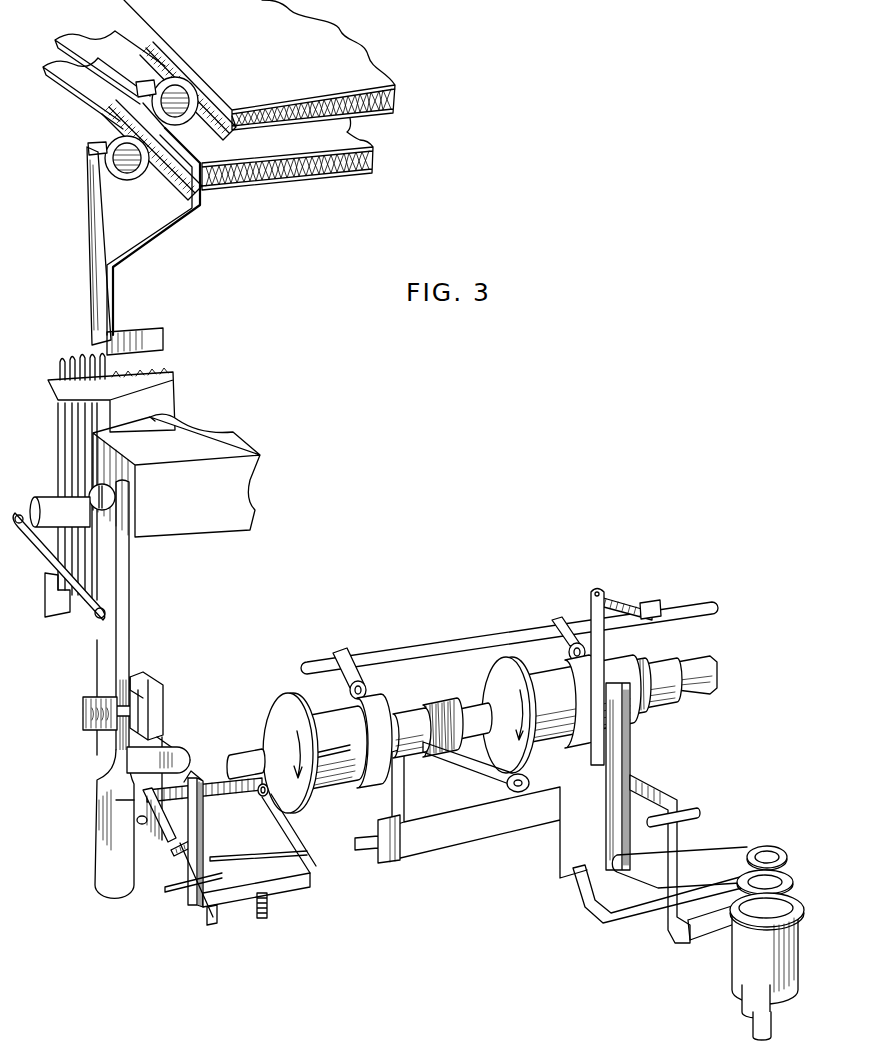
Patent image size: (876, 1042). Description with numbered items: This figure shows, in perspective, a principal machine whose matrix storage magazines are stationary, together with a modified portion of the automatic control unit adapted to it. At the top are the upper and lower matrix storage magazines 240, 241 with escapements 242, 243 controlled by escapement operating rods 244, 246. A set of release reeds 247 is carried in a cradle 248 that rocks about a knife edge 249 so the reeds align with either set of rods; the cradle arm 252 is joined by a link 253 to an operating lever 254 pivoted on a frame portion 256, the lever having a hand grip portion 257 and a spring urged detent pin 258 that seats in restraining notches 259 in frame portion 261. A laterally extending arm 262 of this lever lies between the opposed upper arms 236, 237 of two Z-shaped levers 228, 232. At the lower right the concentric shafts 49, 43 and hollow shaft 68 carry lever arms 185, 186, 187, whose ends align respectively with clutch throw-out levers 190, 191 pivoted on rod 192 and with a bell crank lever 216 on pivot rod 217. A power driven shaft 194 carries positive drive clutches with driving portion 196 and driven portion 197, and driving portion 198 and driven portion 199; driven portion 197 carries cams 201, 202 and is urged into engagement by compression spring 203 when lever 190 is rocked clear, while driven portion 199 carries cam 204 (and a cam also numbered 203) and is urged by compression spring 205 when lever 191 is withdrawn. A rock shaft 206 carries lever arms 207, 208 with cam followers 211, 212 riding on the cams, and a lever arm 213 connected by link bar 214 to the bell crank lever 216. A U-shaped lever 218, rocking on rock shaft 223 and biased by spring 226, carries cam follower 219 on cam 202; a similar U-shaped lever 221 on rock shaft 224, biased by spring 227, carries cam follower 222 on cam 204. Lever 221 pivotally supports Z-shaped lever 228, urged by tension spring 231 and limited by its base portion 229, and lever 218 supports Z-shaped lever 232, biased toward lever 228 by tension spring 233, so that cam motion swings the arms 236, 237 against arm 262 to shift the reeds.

The upper matrix storage magazine 240 is at (380, 76).
The lower matrix storage magazine 241 is at (357, 143).
The escapement 242 is at (186, 118).
The escapement 243 is at (133, 182).
The escapement operating rod 244 is at (151, 243).
The escapement operating rod 246 is at (88, 218).
The release reeds 247 is at (57, 435).
The cradle 248 is at (168, 388).
The knife edge 249 is at (56, 616).
The arm 252 is at (60, 495).
The link 253 is at (45, 556).
The operating lever 254 is at (130, 566).
The frame portion 256 is at (240, 486).
The hand grip portion 257 is at (110, 886).
The spring urged detent pin 258 is at (117, 692).
The restraining notches 259 is at (142, 686).
The frame portion 261 is at (152, 696).
The laterally extending arm 262 is at (176, 746).
The upper arm 237 is at (162, 730).
The upper arm 236 is at (191, 770).
The spring 226 is at (140, 789).
The Z-shaped lever 232 is at (136, 815).
The rock shaft 223 is at (138, 826).
The tension spring 233 is at (180, 853).
The tension spring 231 is at (182, 875).
The base portion 229 is at (211, 917).
The spring 227 is at (265, 920).
The U-shaped lever 221 is at (293, 889).
The cam follower 222 is at (262, 800).
The rock shaft 224 is at (253, 859).
The Z-shaped lever 228 is at (198, 822).
The U-shaped lever 218 is at (225, 782).
The cam follower 219 is at (508, 793).
The cam 204 is at (266, 719).
The compression spring 205 is at (334, 781).
The compression spring 203 is at (378, 697).
The driven portion 199 is at (413, 719).
The driving portion 198 is at (440, 711).
The cam 202 is at (497, 671).
The cam 201 is at (606, 677).
The driven portion 197 is at (628, 672).
The driving portion 196 is at (664, 668).
The power driven shaft 194 is at (707, 662).
The rock shaft 206 is at (699, 603).
The lever arm 207 is at (570, 619).
The lever arm 208 is at (343, 652).
The cam follower 211 is at (568, 651).
The cam follower 212 is at (350, 691).
The lever arm 213 is at (631, 602).
The link bar 214 is at (591, 591).
The clutch throw-out lever 190 is at (628, 753).
The clutch throw-out lever 191 is at (470, 836).
The rod 192 is at (372, 850).
The bell crank lever 216 is at (674, 803).
The pivot rod 217 is at (694, 806).
The lever arm 185 is at (715, 866).
The lever arm 186 is at (630, 918).
The lever arm 187 is at (690, 941).
The hollow shaft 68 is at (743, 972).
The shaft 43 is at (745, 1007).
The shaft 49 is at (752, 1031).